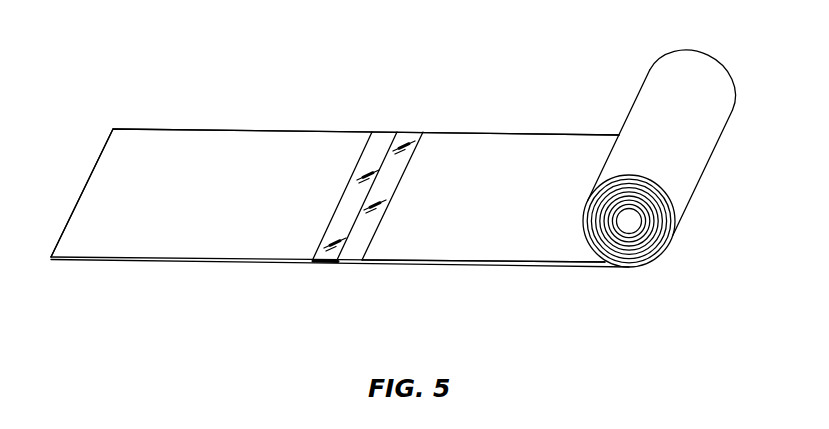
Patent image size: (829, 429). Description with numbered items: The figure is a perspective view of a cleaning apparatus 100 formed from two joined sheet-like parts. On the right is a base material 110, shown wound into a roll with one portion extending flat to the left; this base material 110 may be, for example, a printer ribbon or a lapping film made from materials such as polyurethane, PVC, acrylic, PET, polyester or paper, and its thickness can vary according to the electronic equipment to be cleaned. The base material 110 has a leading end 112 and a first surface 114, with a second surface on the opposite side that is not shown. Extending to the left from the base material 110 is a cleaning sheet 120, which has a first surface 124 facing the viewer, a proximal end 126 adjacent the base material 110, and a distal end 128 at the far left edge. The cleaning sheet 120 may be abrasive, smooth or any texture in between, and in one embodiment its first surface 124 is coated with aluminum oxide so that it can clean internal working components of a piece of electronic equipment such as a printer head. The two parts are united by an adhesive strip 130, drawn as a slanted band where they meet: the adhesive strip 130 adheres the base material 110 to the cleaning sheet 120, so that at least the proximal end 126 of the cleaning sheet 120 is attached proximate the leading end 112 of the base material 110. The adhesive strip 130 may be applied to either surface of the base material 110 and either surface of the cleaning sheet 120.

The cleaning apparatus 100 is at (281, 50).
The base material 110 is at (690, 70).
The leading end 112 is at (405, 141).
The first surface 114 is at (456, 254).
The cleaning sheet 120 is at (274, 138).
The first surface 124 is at (222, 253).
The proximal end 126 is at (327, 261).
The distal end 128 is at (84, 189).
The adhesive strip 130 is at (380, 141).